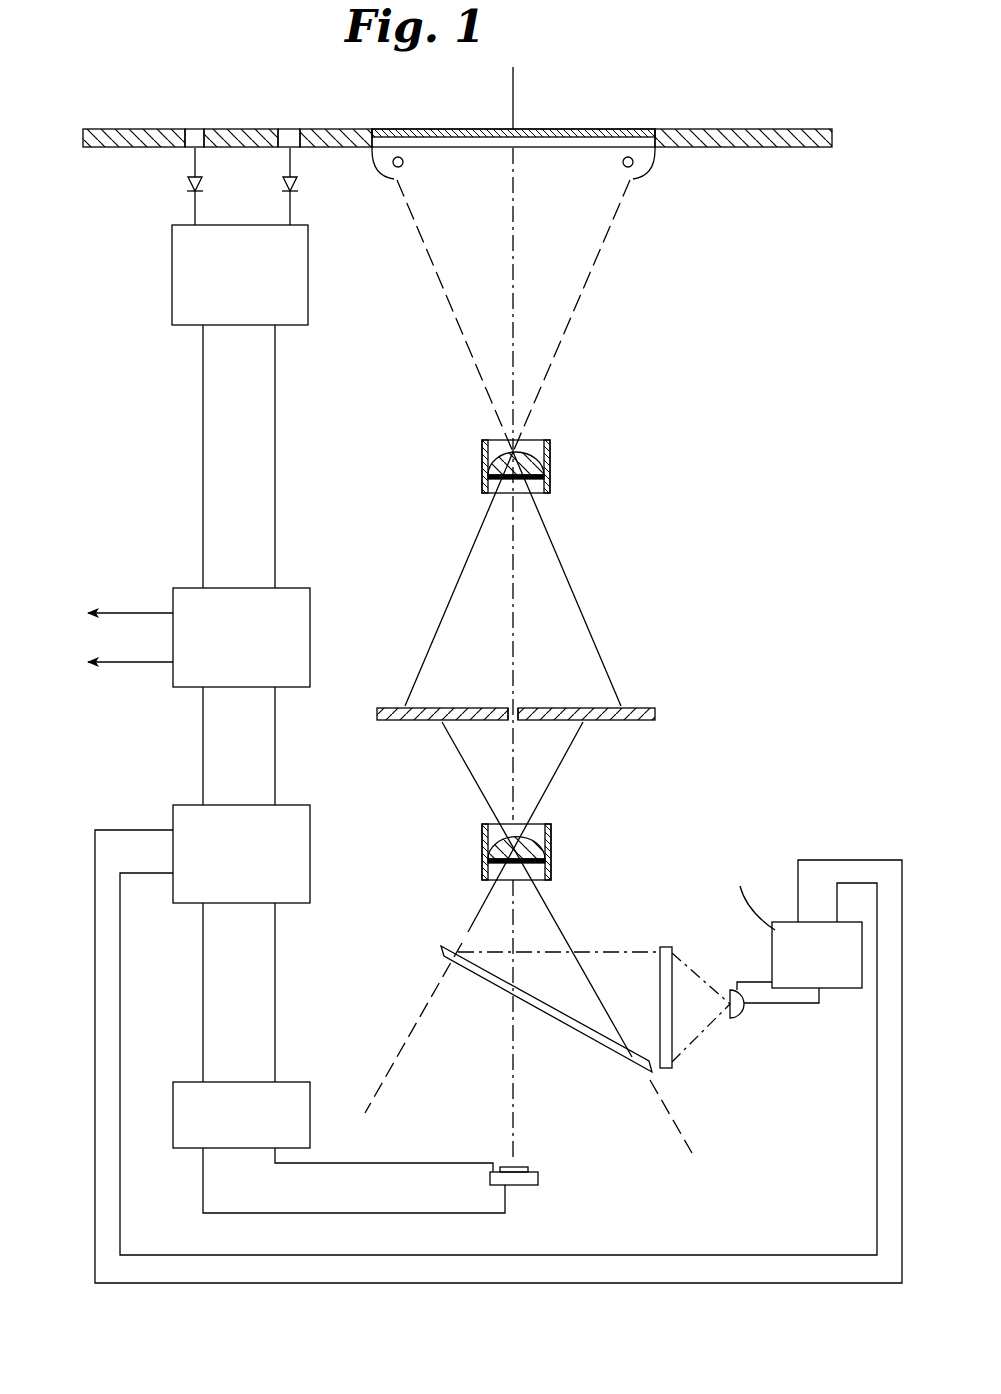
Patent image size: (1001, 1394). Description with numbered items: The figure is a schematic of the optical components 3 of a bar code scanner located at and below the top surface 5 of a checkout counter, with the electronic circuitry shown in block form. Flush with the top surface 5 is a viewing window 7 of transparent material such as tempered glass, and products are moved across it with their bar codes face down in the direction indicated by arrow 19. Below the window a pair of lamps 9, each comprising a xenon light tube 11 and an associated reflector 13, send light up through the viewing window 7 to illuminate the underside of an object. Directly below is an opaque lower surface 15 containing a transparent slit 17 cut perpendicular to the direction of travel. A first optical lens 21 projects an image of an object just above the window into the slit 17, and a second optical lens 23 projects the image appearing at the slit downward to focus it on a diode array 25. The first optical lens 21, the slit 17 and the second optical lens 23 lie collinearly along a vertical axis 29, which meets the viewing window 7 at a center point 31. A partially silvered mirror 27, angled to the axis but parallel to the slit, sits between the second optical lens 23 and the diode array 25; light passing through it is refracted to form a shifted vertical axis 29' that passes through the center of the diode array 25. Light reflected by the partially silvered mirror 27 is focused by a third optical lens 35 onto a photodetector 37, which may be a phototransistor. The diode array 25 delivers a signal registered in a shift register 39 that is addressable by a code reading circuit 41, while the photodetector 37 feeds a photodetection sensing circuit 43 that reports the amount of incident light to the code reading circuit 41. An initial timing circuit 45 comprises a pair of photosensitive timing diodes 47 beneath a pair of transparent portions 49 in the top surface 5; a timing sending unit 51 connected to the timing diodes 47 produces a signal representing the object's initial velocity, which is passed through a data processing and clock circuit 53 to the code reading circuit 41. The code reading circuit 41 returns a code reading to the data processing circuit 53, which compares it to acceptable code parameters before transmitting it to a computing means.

The optical components 3 is at (683, 1180).
The top surface 5 is at (752, 117).
The viewing window 7 is at (600, 129).
The lamps 9 is at (597, 168).
The xenon light tubes 11 is at (372, 158).
The reflectors 13 is at (375, 179).
The lower surface 15 is at (655, 712).
The slit 17 is at (511, 708).
The arrow indicating intended direction of travel 19 is at (435, 100).
The first optical lens 21 is at (552, 458).
The second optical lens 23 is at (552, 838).
The diode array 25 is at (545, 1177).
The partially silvered mirror 27 is at (563, 1028).
The vertical axis 29 is at (542, 443).
The shifted vertical axis 29' is at (550, 1019).
The center point 31 is at (515, 97).
The third optical lens 35 is at (666, 948).
The photodetector 37 is at (745, 1018).
The shift register 39 is at (300, 1081).
The code reading circuit 41 is at (312, 838).
The photodetection sensing circuit 43 is at (772, 958).
The initial timing circuit 45 is at (130, 297).
The photosensitive timing diodes 47 is at (290, 183).
The transparent portions 49 is at (292, 129).
The timing sending unit 51 is at (310, 290).
The data processing and clock circuit 53 is at (312, 612).